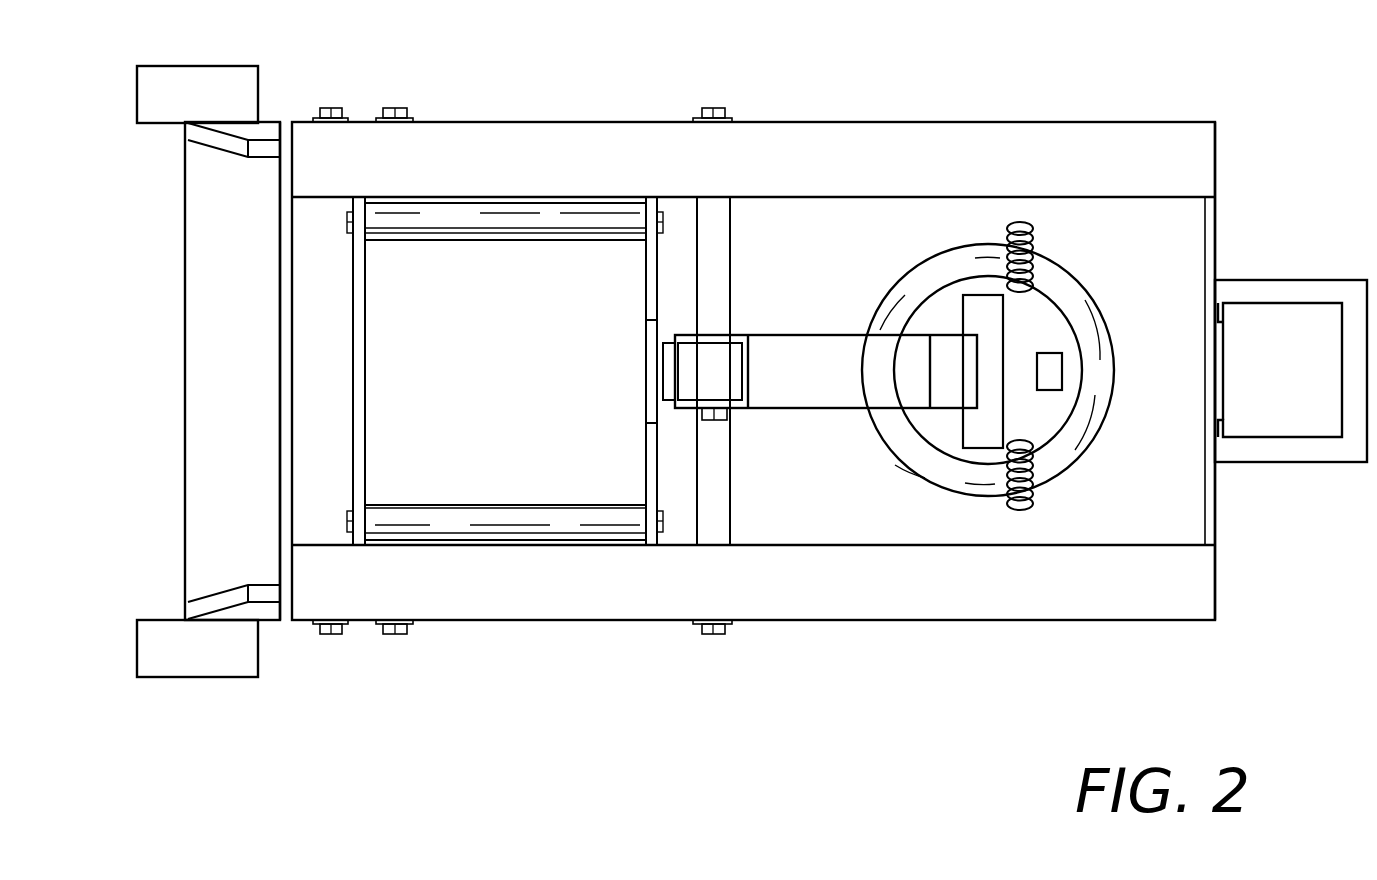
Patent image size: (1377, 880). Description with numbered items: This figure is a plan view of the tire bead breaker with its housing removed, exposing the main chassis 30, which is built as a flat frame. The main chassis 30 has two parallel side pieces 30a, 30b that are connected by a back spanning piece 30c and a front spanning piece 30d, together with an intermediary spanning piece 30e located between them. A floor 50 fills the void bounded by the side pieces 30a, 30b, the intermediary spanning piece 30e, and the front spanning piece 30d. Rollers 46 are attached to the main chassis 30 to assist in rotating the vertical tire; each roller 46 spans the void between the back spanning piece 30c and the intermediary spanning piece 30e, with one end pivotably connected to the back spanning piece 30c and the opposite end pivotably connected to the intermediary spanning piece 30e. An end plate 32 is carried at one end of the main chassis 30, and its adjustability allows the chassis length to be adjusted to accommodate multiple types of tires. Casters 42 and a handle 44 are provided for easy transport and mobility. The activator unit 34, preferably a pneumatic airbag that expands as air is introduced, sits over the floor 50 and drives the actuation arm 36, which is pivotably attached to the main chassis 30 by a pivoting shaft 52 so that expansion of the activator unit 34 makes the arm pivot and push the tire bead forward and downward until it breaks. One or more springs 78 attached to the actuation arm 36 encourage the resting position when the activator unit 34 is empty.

The main chassis 30 is at (882, 620).
The side piece 30a is at (503, 602).
The side piece 30b is at (453, 148).
The back spanning piece 30c is at (367, 335).
The front spanning piece 30d is at (1217, 213).
The intermediary spanning piece 30e is at (643, 295).
The end plate 32 is at (283, 621).
The activator unit 34 is at (1048, 260).
The actuation arm 36 is at (790, 333).
The casters 42 is at (197, 678).
The handle 44 is at (1308, 278).
The rollers 46 is at (482, 242).
The floor 50 is at (806, 521).
The pivoting shaft 52 is at (730, 433).
The spring 78 is at (1040, 497).